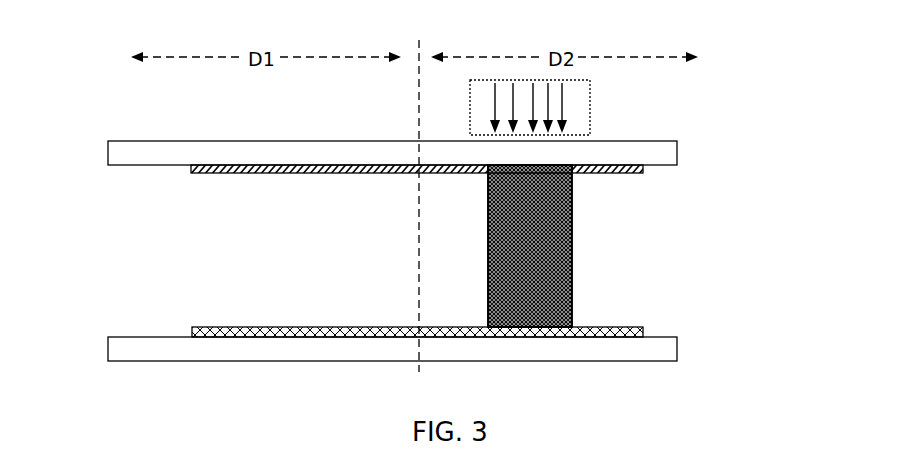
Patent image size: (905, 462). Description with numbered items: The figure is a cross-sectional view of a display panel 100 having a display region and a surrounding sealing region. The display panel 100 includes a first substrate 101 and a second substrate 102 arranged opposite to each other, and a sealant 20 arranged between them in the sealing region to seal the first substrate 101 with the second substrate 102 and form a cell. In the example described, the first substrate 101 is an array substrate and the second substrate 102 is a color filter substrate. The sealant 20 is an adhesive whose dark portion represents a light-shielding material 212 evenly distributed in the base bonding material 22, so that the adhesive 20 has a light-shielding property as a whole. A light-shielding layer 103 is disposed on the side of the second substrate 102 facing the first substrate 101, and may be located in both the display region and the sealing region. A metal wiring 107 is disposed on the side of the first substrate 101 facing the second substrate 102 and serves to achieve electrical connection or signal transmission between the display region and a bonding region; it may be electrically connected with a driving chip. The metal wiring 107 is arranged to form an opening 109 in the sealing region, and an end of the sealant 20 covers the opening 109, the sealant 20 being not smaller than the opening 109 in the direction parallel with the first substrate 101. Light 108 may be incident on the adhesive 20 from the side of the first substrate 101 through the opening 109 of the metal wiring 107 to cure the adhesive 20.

The display panel 100 is at (365, 36).
The first substrate 101 is at (678, 154).
The second substrate 102 is at (678, 350).
The light-shielding layer 103 is at (643, 331).
The metal wiring 107 is at (191, 168).
The light 108 is at (592, 104).
The opening 109 is at (487, 173).
The sealant 20 is at (572, 267).
The light-shielding material 212 is at (555, 203).
The base bonding material 22 is at (555, 234).